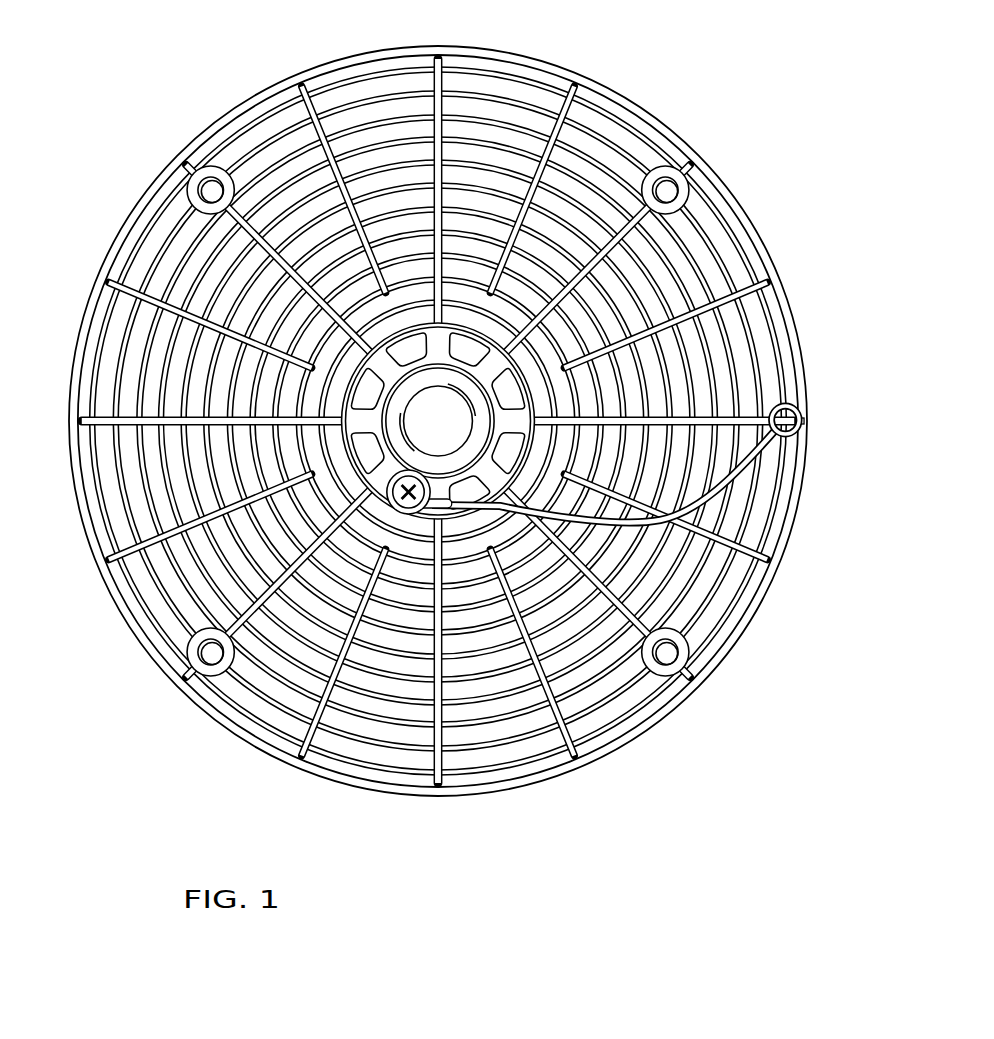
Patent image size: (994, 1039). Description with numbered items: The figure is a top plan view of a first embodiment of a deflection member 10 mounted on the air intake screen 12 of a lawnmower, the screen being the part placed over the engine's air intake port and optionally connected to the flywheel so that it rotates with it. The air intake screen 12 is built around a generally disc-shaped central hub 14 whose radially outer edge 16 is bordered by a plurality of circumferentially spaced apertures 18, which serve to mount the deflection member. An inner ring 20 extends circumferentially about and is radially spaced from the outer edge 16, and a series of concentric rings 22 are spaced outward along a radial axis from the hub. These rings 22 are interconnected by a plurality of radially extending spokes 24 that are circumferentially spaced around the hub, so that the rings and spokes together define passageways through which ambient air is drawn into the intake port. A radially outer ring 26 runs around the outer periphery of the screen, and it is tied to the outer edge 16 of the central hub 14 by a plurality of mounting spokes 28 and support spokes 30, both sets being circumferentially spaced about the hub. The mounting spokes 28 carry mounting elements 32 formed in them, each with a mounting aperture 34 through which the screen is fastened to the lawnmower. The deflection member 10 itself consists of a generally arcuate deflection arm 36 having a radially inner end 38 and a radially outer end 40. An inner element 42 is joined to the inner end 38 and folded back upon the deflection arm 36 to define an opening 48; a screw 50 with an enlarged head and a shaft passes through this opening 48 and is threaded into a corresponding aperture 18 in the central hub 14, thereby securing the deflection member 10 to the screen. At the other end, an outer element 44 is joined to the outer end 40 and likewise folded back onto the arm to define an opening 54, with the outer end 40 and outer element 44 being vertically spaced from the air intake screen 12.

The deflection member 10 is at (752, 480).
The air intake screen 12 is at (322, 794).
The central hub 14 is at (391, 327).
The radially outer edge 16 is at (473, 322).
The apertures 18 is at (565, 350).
The inner ring 20 is at (138, 278).
The concentric rings 22 is at (96, 512).
The spokes 24 is at (322, 105).
The outer ring 26 is at (88, 302).
The mounting spokes 28 is at (275, 135).
The support spokes 30 is at (447, 103).
The mounting elements 32 is at (215, 167).
The mounting apertures 34 is at (200, 185).
The deflection arm 36 is at (540, 443).
The radially inner end 38 is at (414, 514).
The radially outer end 40 is at (772, 462).
The inner element 42 is at (530, 365).
The outer element 44 is at (774, 442).
The opening 48 is at (455, 497).
The screw 50 is at (200, 456).
The opening 54 is at (796, 408).